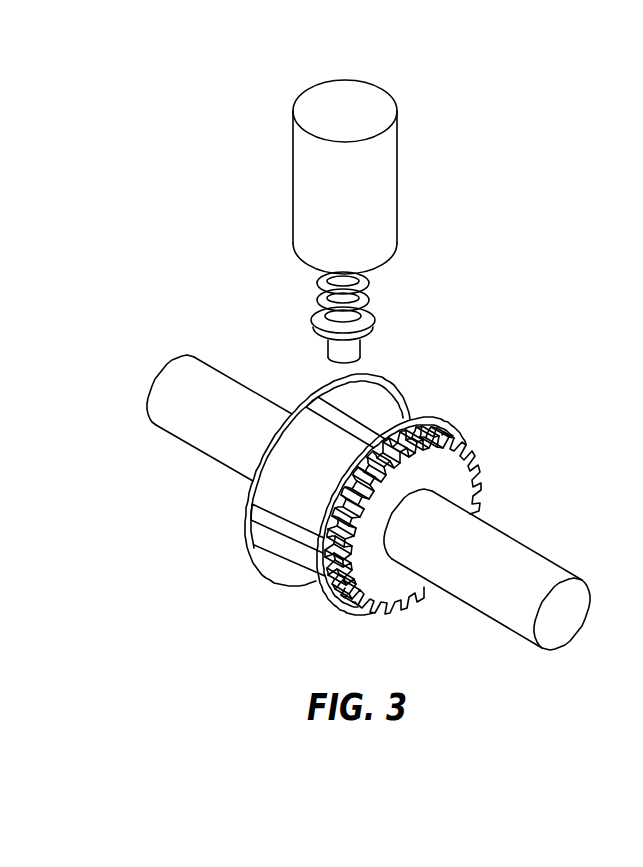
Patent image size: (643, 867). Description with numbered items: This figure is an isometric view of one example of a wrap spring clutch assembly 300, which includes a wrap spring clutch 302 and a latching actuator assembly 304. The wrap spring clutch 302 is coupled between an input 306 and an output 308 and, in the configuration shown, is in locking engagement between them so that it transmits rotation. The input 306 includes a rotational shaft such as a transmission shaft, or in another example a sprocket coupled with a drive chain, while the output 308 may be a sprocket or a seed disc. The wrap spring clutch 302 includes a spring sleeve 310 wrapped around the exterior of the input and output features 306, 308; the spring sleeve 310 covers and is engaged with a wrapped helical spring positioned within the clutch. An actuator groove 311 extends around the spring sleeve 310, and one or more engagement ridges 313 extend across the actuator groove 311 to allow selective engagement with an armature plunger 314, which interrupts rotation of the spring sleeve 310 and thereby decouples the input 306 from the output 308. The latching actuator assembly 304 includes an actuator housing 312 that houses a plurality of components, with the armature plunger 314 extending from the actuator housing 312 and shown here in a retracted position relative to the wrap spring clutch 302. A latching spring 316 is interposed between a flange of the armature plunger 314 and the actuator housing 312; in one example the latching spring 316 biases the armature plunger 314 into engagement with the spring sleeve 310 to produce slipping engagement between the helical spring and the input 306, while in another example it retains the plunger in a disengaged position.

The wrap spring clutch assembly 300 is at (189, 130).
The wrap spring clutch 302 is at (455, 430).
The latching actuator assembly 304 is at (383, 181).
The input 306 is at (191, 436).
The output 308 is at (468, 492).
The spring sleeve 310 is at (295, 565).
The actuator groove 311 is at (270, 494).
The actuator housing 312 is at (305, 227).
The engagement ridges 313 is at (376, 418).
The armature plunger 314 is at (352, 351).
The latching spring 316 is at (318, 287).